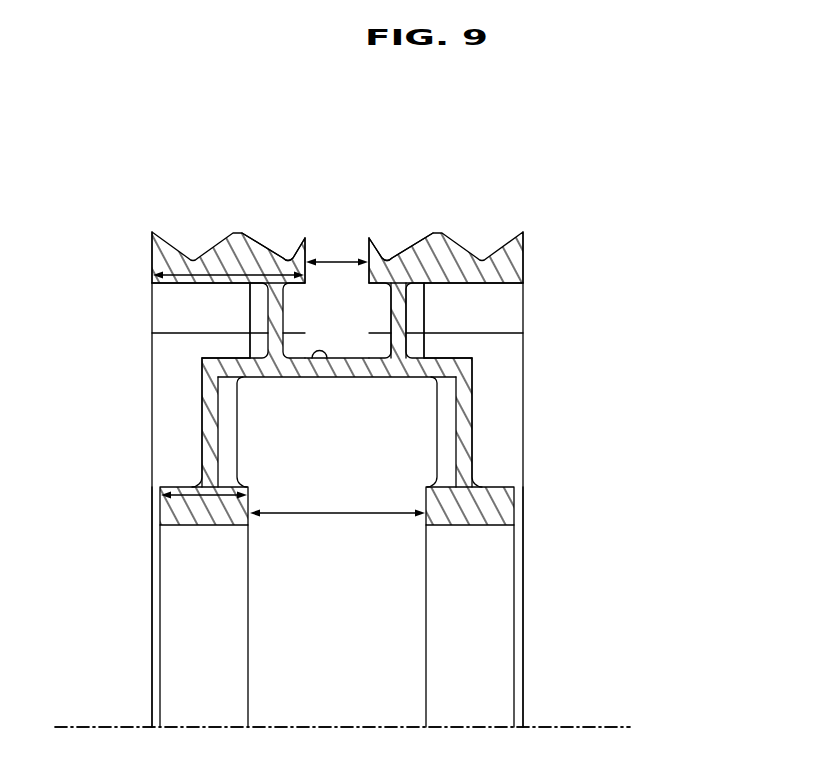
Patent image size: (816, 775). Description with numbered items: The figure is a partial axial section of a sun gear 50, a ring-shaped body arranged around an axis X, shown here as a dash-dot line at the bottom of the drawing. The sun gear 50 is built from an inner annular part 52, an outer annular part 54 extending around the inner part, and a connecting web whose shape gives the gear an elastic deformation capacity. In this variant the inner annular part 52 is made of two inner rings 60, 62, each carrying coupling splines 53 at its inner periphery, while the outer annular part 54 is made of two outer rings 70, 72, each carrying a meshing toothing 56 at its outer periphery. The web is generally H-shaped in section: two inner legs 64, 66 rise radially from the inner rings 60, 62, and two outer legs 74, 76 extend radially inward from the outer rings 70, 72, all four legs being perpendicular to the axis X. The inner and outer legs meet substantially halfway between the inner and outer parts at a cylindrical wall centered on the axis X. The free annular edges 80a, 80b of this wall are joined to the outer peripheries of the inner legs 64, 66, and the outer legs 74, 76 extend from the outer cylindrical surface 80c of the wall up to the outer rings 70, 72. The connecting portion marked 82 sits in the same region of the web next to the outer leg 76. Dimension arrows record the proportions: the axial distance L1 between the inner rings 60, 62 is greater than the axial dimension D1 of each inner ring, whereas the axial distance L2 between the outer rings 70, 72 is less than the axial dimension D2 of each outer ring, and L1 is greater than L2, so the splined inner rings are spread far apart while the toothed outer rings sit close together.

The sun gear 50 is at (658, 279).
The inner annular part 52 is at (538, 516).
The coupling splines 53 is at (190, 583).
The outer annular part 54 is at (548, 246).
The meshing toothing 56 is at (293, 232).
The inner ring 60 is at (165, 507).
The inner ring 62 is at (497, 503).
The inner leg 64 is at (223, 420).
The inner leg 66 is at (465, 437).
The outer ring 70 is at (152, 262).
The outer ring 72 is at (450, 283).
The outer leg 74 is at (250, 333).
The outer leg 76 is at (430, 322).
The free annular edge 80a is at (202, 364).
The free annular edge 80b is at (468, 376).
The outer cylindrical surface 80c is at (320, 360).
The web portion 82 is at (408, 350).
The axial dimension of inner ring D1 is at (200, 485).
The axial dimension of outer ring D2 is at (240, 234).
The axial distance between inner rings L1 is at (337, 500).
The axial distance between outer rings L2 is at (347, 240).
The axis X is at (580, 727).